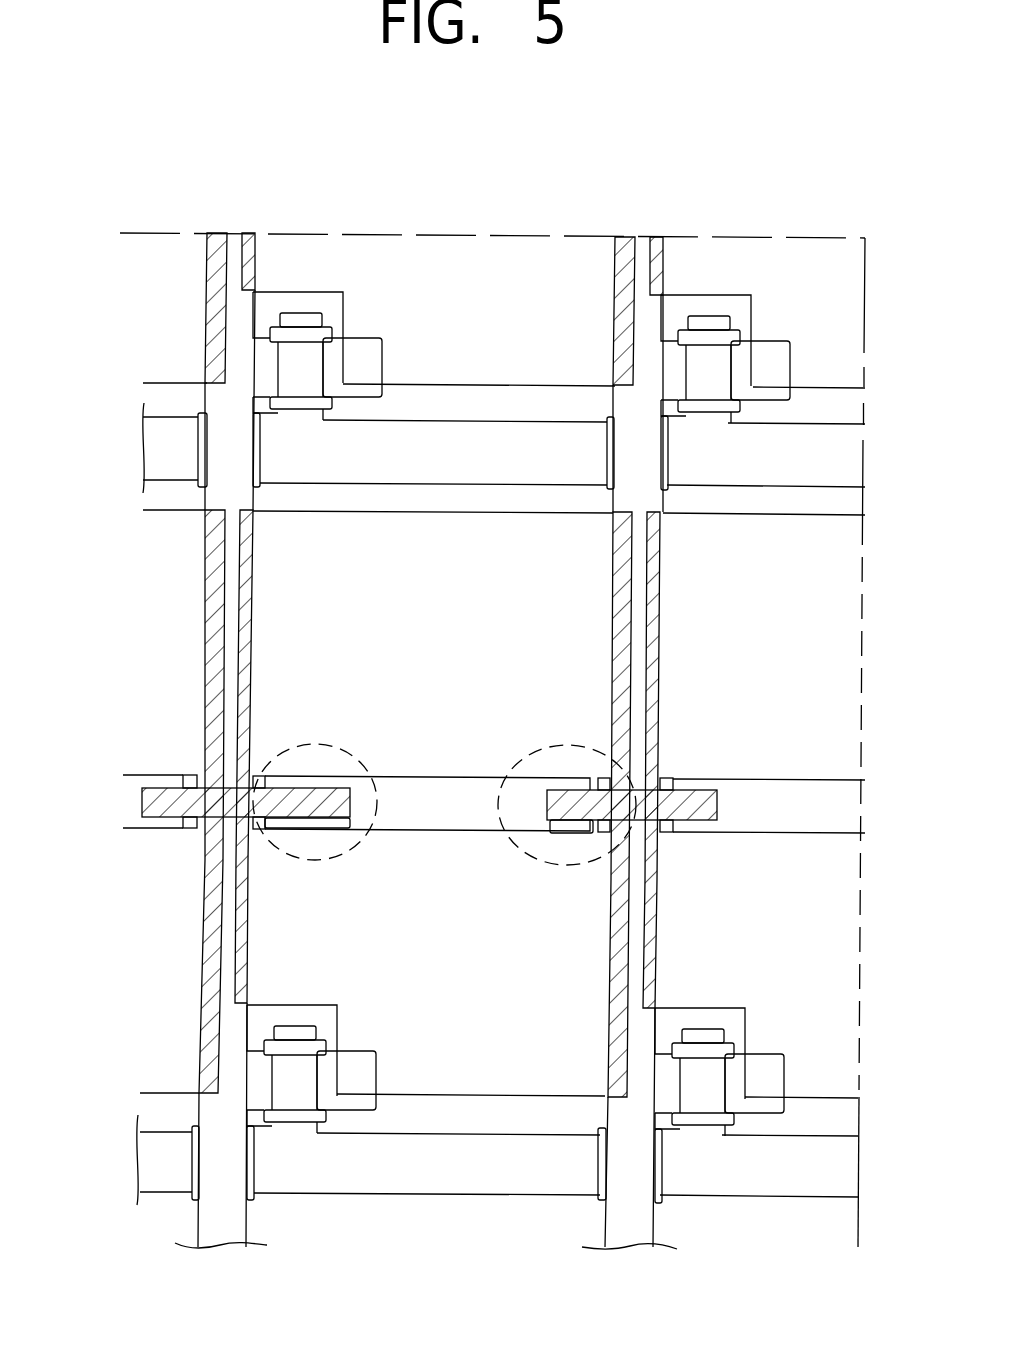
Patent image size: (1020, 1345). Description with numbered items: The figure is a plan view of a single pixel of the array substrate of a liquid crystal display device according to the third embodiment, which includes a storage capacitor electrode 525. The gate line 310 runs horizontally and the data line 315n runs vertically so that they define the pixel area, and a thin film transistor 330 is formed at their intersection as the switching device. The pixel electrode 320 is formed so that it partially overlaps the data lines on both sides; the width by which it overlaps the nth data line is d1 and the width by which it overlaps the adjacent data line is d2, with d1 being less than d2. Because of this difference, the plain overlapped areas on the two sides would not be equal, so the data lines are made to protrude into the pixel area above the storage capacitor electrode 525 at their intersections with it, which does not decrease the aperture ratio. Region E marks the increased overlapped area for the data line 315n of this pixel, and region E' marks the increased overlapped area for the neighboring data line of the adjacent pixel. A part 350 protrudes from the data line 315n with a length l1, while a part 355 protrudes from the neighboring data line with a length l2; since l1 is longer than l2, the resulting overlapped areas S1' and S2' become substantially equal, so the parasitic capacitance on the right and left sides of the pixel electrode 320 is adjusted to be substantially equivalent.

The nth data line 315n is at (213, 1222).
The storage capacitor electrode 525 is at (435, 796).
The part protruding from the nth data line 350 is at (345, 812).
The part protruding from the n+1th data line 355 is at (548, 804).
The thin film transistor 330 is at (293, 1078).
The gate line 310 is at (437, 1165).
The pixel electrode 320 is at (510, 1067).
The overlapped area of the nth data line and the pixel electrode S1' is at (302, 570).
The overlapped area of the n+1th data line and the pixel electrode S2' is at (558, 601).
The overlap width of the nth data line d1 is at (193, 558).
The overlap width of the n+1th data line d2 is at (683, 563).
The region of increased overlapped area for the nth data line E is at (315, 763).
The region of increased overlapped area for the n+1th data line E' is at (557, 769).
The length of the protruding part of the nth data line l1 is at (300, 844).
The length of the protruding part of the n+1th data line l2 is at (573, 849).